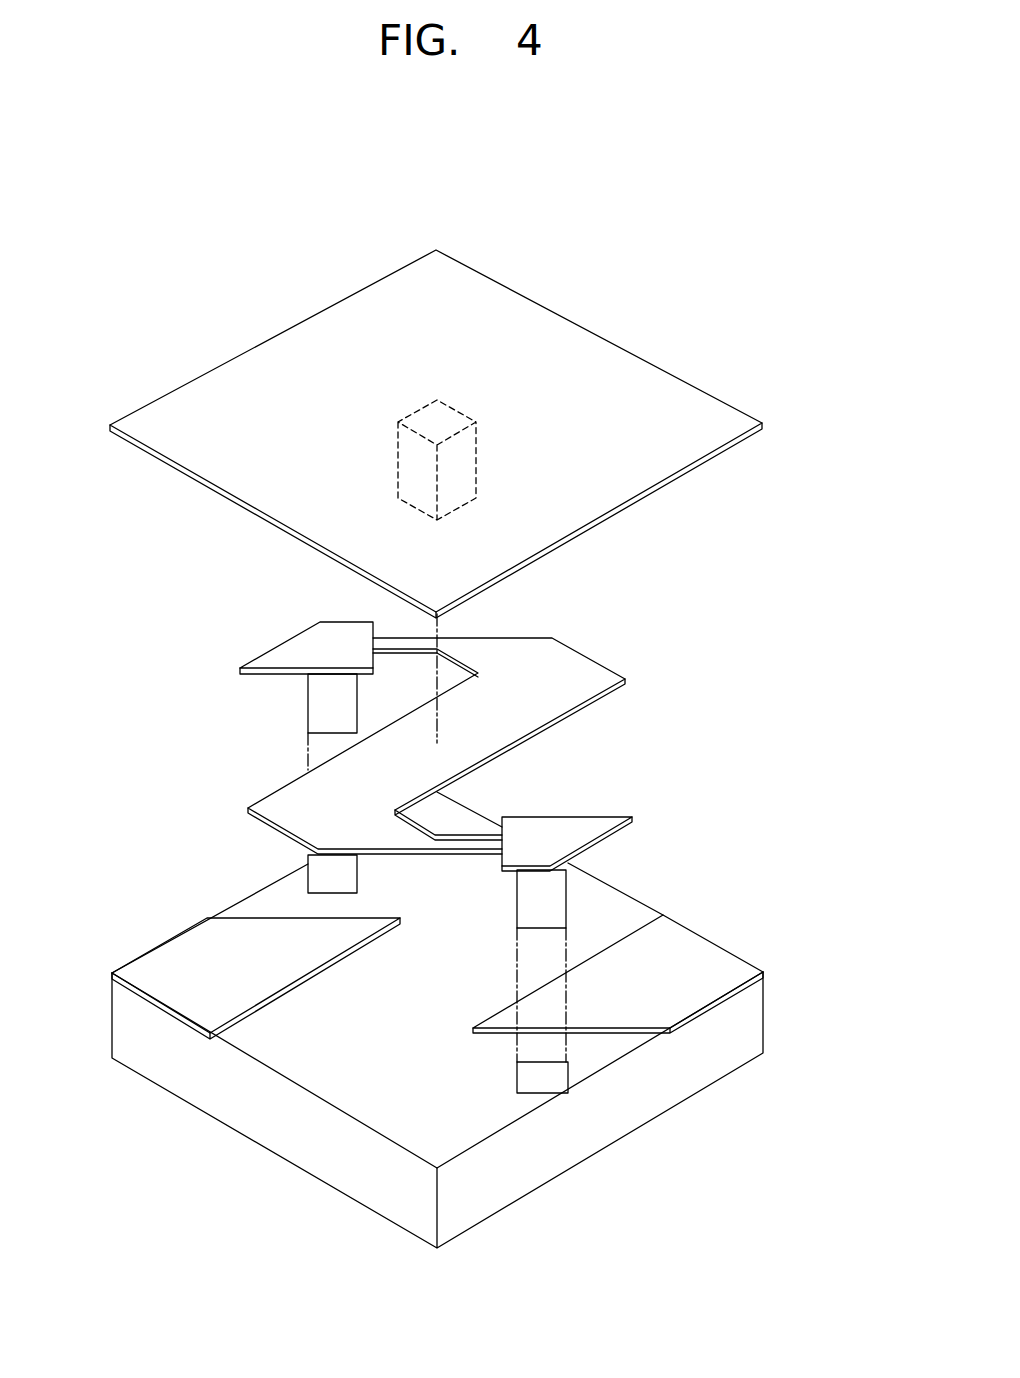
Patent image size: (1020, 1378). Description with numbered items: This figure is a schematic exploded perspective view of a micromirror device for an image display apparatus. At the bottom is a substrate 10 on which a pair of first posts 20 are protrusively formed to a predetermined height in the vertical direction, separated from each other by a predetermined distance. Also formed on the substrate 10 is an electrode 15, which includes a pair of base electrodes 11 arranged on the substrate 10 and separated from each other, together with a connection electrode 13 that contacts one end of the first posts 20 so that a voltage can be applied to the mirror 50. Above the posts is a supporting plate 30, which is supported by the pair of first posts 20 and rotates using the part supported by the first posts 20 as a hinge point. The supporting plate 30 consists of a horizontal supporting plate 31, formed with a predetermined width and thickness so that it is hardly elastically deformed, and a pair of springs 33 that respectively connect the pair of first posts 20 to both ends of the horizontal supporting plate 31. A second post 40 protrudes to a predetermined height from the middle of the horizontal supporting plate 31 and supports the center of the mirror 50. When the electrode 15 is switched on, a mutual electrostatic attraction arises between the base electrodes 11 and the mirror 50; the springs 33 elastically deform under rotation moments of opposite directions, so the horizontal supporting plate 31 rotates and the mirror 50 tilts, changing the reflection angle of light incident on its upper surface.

The substrate 10 is at (325, 1152).
The base electrodes 11 is at (183, 953).
The connection electrode 13 is at (550, 1078).
The electrode 15 is at (443, 1037).
The first posts 20 is at (320, 702).
The supporting plate 30 is at (407, 719).
The horizontal supporting plate 31 is at (567, 670).
The springs 33 is at (402, 642).
The second post 40 is at (458, 493).
The mirror 50 is at (705, 418).